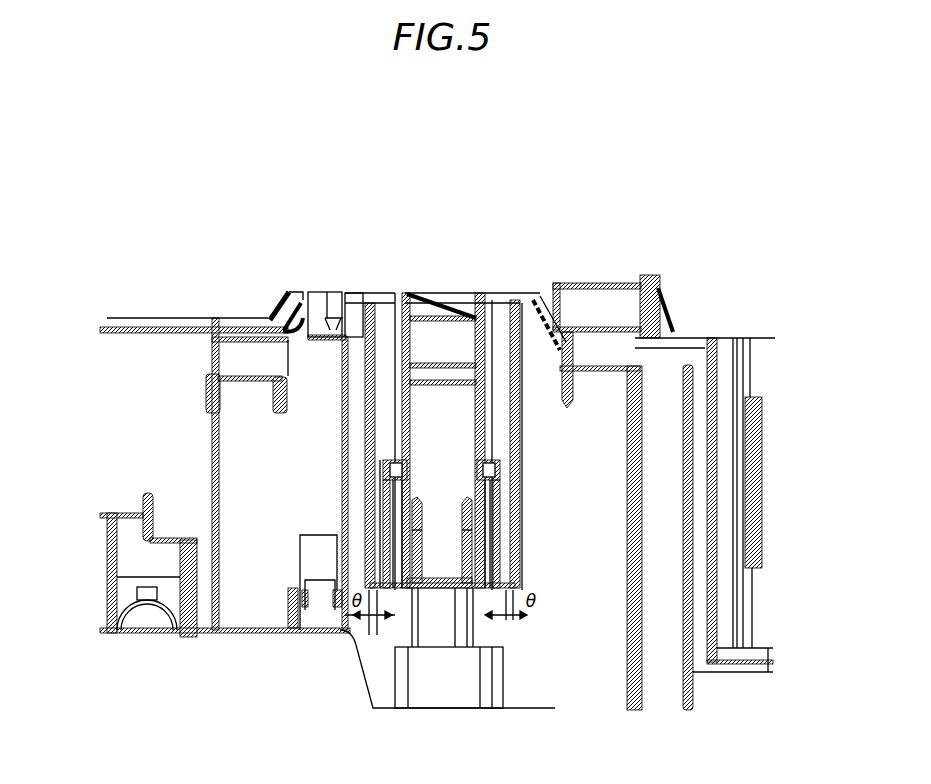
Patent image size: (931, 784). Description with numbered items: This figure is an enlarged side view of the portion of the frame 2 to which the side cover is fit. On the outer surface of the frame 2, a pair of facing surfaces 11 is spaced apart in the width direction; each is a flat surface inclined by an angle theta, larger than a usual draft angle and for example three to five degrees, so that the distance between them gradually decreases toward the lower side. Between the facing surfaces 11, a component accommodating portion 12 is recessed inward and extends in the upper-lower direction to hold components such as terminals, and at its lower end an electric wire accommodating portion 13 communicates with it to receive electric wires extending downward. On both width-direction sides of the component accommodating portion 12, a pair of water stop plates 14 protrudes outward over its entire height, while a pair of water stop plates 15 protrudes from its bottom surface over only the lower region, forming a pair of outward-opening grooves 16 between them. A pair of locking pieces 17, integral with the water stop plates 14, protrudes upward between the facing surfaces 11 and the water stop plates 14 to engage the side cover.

The frame 2 is at (437, 240).
The facing surfaces 11 is at (376, 362).
The component accommodating portion 12 is at (450, 417).
The electric wire accommodating portion 13 is at (443, 633).
The water stop plates 14 is at (395, 422).
The water stop plates 15 is at (413, 518).
The grooves 16 is at (413, 547).
The locking pieces 17 is at (388, 467).